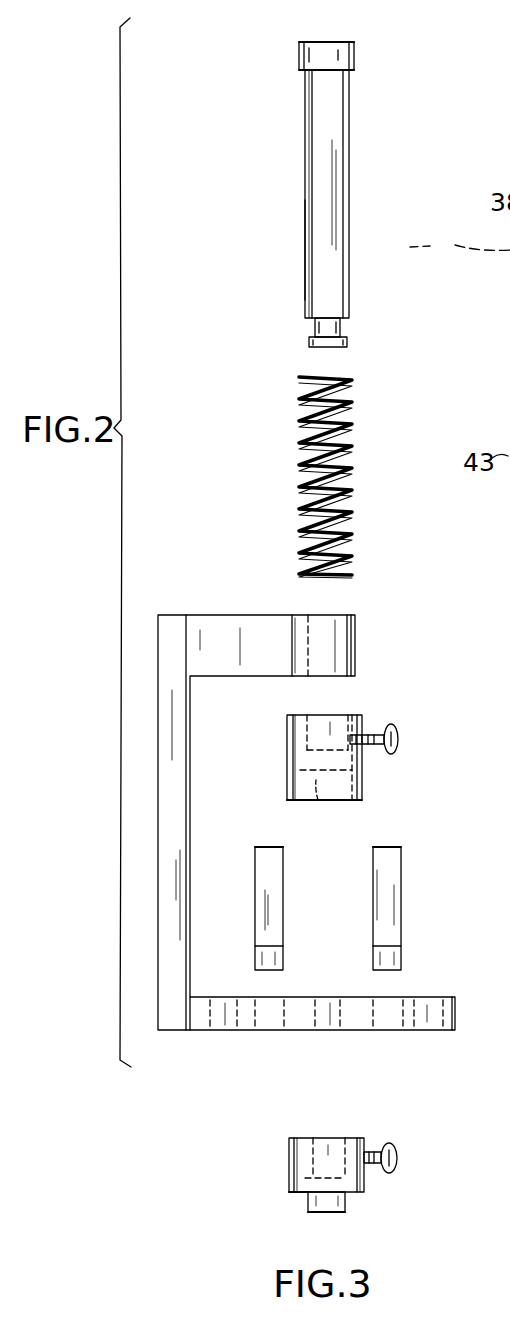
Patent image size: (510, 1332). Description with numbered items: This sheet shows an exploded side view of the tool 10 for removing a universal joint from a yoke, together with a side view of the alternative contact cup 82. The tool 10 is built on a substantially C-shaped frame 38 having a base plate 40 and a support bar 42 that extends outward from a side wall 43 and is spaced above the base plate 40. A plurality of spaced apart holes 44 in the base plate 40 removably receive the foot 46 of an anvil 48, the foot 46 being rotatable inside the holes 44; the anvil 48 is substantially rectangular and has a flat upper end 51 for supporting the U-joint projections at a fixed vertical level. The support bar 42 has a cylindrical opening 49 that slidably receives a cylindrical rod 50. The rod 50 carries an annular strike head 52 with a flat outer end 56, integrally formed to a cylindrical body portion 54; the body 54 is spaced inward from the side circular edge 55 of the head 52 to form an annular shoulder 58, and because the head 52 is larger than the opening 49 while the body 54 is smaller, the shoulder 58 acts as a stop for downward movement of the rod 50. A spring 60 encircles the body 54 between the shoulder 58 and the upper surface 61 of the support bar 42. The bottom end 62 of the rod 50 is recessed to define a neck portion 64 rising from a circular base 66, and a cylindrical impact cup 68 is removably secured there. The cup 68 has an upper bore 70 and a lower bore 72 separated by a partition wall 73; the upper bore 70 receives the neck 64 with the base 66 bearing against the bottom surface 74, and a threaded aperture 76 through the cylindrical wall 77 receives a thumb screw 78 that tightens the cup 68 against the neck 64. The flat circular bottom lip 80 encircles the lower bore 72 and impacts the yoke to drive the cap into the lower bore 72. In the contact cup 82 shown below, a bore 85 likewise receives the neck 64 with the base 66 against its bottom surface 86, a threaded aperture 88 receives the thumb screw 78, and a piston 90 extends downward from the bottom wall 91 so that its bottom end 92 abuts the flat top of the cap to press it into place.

In FIG. 2, the tool 10 is at (378, 118).
In FIG. 2, the frame 38 is at (210, 605).
In FIG. 2, the base plate 40 is at (217, 1030).
In FIG. 2, the support bar 42 is at (218, 668).
In FIG. 2, the side wall 43 is at (174, 882).
In FIG. 2, the holes 44 is at (265, 1015).
In FIG. 2, the foot 46 is at (270, 970).
In FIG. 2, the anvil 48 is at (275, 890).
In FIG. 2, the cylindrical opening 49 is at (336, 622).
In FIG. 2, the rod 50 is at (295, 249).
In FIG. 2, the flat upper end 51 is at (270, 847).
In FIG. 2, the strike head 52 is at (322, 42).
In FIG. 2, the body portion 54 is at (318, 158).
In FIG. 2, the side circular edge 55 is at (344, 52).
In FIG. 2, the flat outer end 56 is at (328, 42).
In FIG. 2, the annular shoulder 58 is at (303, 70).
In FIG. 2, the spring 60 is at (300, 410).
In FIG. 2, the upper surface 61 is at (262, 614).
In FIG. 2, the bottom end 62 is at (308, 346).
In FIG. 2, the neck portion 64 is at (340, 328).
In FIG. 2, the circular base 66 is at (347, 340).
In FIG. 2, the impact cup 68 is at (372, 768).
In FIG. 2, the upper bore 70 is at (328, 725).
In FIG. 2, the lower bore 72 is at (300, 800).
In FIG. 2, the partition wall 73 is at (310, 758).
In FIG. 2, the bottom surface 74 is at (310, 722).
In FIG. 2, the threaded aperture 76 is at (355, 735).
In FIG. 3, the threaded aperture 76 is at (367, 1165).
In FIG. 2, the cylindrical wall 77 is at (290, 775).
In FIG. 2, the thumb screw 78 is at (393, 738).
In FIG. 3, the thumb screw 78 is at (390, 1158).
In FIG. 2, the bottom lip 80 is at (358, 800).
In FIG. 3, the contact cup 82 is at (280, 1132).
In FIG. 3, the bore 85 is at (327, 1148).
In FIG. 3, the bottom surface 86 is at (316, 1140).
In FIG. 3, the threaded aperture 88 is at (360, 1135).
In FIG. 3, the piston 90 is at (345, 1203).
In FIG. 3, the bottom wall 91 is at (292, 1192).
In FIG. 3, the bottom end 92 is at (318, 1212).